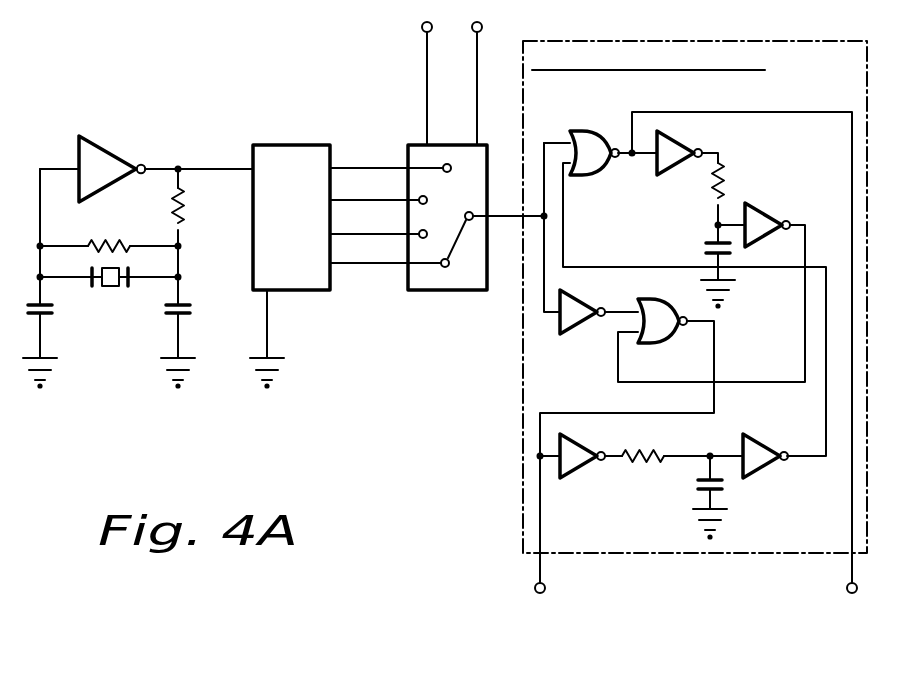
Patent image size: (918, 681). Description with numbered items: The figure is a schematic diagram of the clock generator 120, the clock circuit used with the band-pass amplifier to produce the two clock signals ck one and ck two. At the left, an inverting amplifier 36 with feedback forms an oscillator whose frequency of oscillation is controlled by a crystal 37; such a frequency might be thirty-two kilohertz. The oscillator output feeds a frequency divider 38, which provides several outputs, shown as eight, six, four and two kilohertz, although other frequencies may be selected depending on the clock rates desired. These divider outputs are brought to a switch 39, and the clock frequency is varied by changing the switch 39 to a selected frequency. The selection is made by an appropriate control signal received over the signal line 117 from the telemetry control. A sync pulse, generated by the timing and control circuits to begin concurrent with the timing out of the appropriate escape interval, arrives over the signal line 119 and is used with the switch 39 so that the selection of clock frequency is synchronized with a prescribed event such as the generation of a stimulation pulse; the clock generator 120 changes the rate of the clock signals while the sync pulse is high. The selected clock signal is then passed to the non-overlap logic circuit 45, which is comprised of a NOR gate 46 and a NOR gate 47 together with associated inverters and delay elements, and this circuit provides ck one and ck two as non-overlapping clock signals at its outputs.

The clock generator 120 is at (164, 86).
The inverting amplifier 36 is at (118, 162).
The crystal 37 is at (108, 287).
The frequency divider 38 is at (300, 116).
The switch 39 is at (492, 157).
The non-overlap logic circuit 45 is at (752, 26).
The NOR gate 46 is at (596, 174).
The NOR gate 47 is at (655, 342).
The signal line 117 is at (478, 80).
The signal line 119 is at (426, 75).